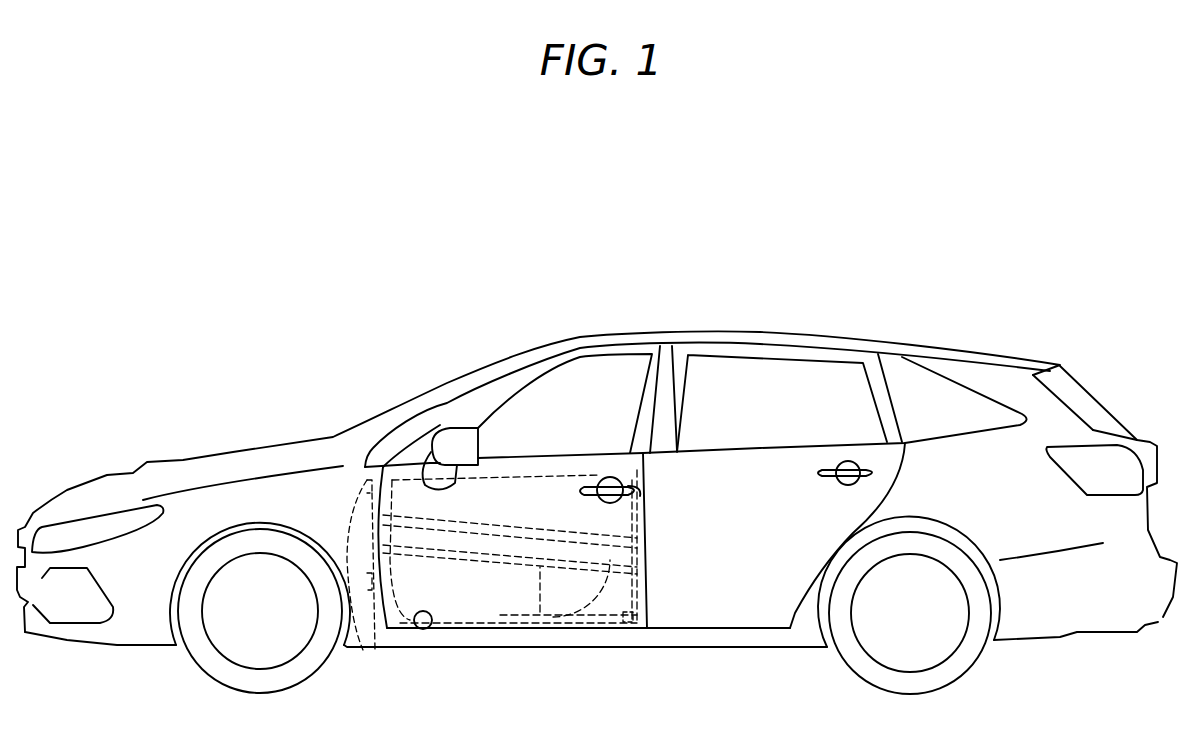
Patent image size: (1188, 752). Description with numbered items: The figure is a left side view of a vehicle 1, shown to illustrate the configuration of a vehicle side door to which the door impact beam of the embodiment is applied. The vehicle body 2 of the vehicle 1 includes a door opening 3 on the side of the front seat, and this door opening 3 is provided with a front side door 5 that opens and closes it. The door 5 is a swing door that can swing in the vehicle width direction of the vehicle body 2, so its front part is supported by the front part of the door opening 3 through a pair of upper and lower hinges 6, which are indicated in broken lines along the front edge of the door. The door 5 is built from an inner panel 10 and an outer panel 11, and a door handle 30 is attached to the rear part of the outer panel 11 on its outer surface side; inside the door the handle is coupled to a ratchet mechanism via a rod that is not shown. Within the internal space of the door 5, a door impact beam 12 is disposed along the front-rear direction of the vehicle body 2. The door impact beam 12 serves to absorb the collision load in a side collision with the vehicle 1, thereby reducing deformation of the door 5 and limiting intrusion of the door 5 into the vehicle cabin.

The vehicle 1 is at (350, 323).
The vehicle body 2 is at (361, 401).
The door opening 3 is at (430, 630).
The front side door 5 is at (478, 630).
The hinges 6 is at (375, 650).
The inner panel 10 is at (669, 670).
The outer panel 11 is at (625, 627).
The door impact beam 12 is at (542, 613).
The door handle 30 is at (601, 480).